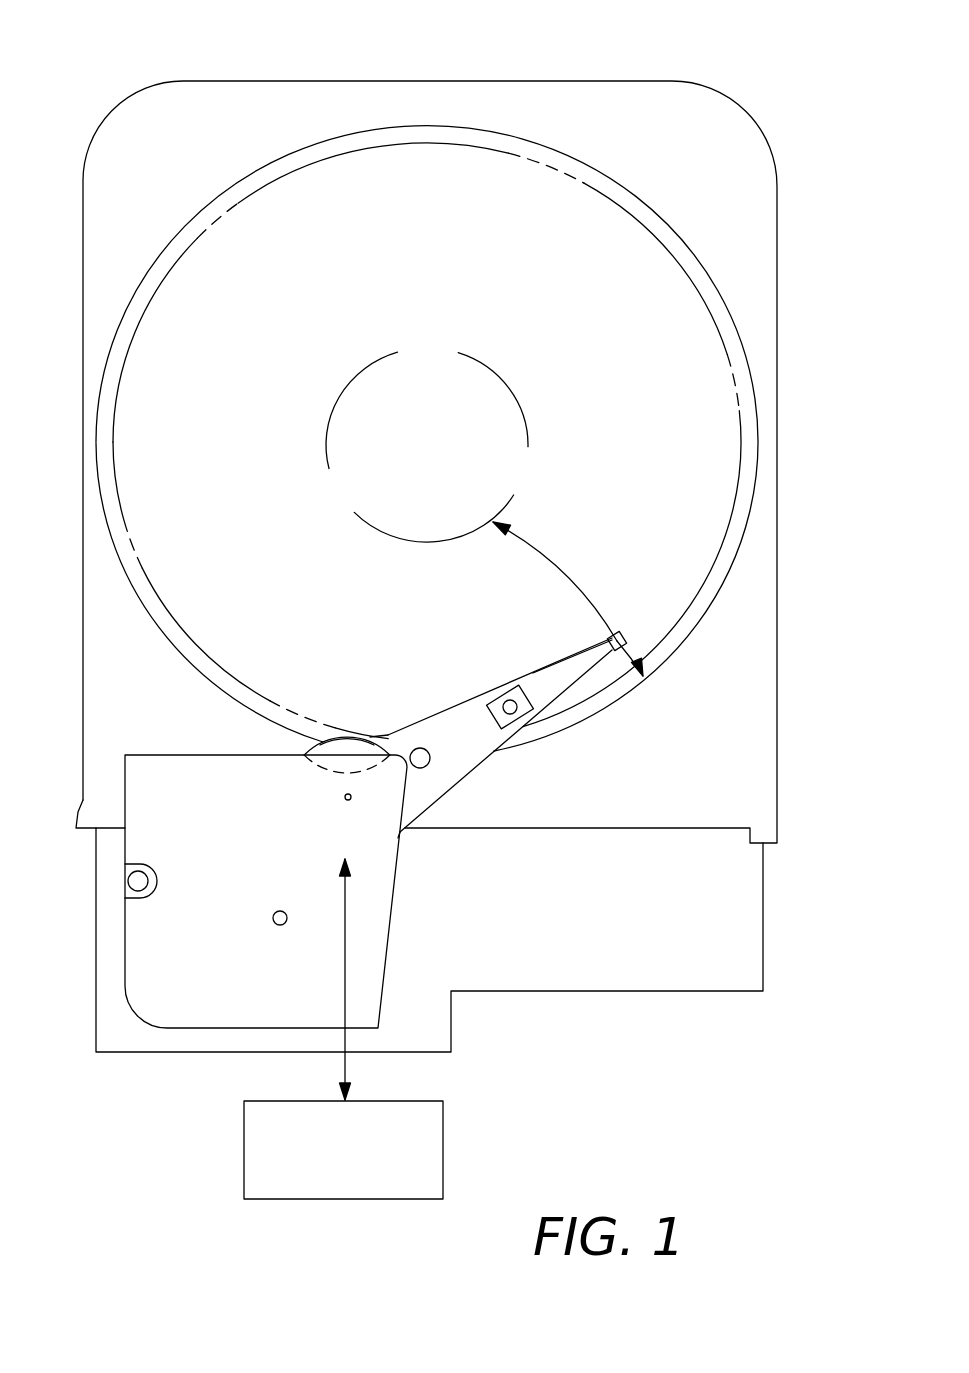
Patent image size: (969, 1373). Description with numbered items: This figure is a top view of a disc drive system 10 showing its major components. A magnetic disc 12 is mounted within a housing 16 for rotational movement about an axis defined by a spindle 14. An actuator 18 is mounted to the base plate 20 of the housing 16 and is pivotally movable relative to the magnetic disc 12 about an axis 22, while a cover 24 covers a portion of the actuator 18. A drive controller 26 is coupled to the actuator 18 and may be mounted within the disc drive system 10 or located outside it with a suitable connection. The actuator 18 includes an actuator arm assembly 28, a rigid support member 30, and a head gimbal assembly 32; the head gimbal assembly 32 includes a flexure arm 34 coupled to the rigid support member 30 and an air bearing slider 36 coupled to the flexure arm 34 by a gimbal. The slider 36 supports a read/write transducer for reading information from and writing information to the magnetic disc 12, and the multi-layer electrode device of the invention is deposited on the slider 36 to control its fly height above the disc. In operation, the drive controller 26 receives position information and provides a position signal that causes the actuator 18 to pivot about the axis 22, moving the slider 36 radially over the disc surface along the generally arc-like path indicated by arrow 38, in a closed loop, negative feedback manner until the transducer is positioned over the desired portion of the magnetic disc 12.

The disc drive system 10 is at (258, 61).
The magnetic disc 12 is at (446, 237).
The spindle 14 is at (447, 460).
The housing 16 is at (777, 248).
The actuator 18 is at (420, 855).
The base plate 20 is at (557, 992).
The axis 22 is at (342, 797).
The cover 24 is at (160, 845).
The drive controller 26 is at (443, 1122).
The actuator arm assembly 28 is at (348, 734).
The rigid support member 30 is at (437, 777).
The head gimbal assembly 32 is at (570, 654).
The flexure arm 34 is at (537, 673).
The air bearing slider 36 is at (623, 633).
The arrow 38 is at (540, 550).